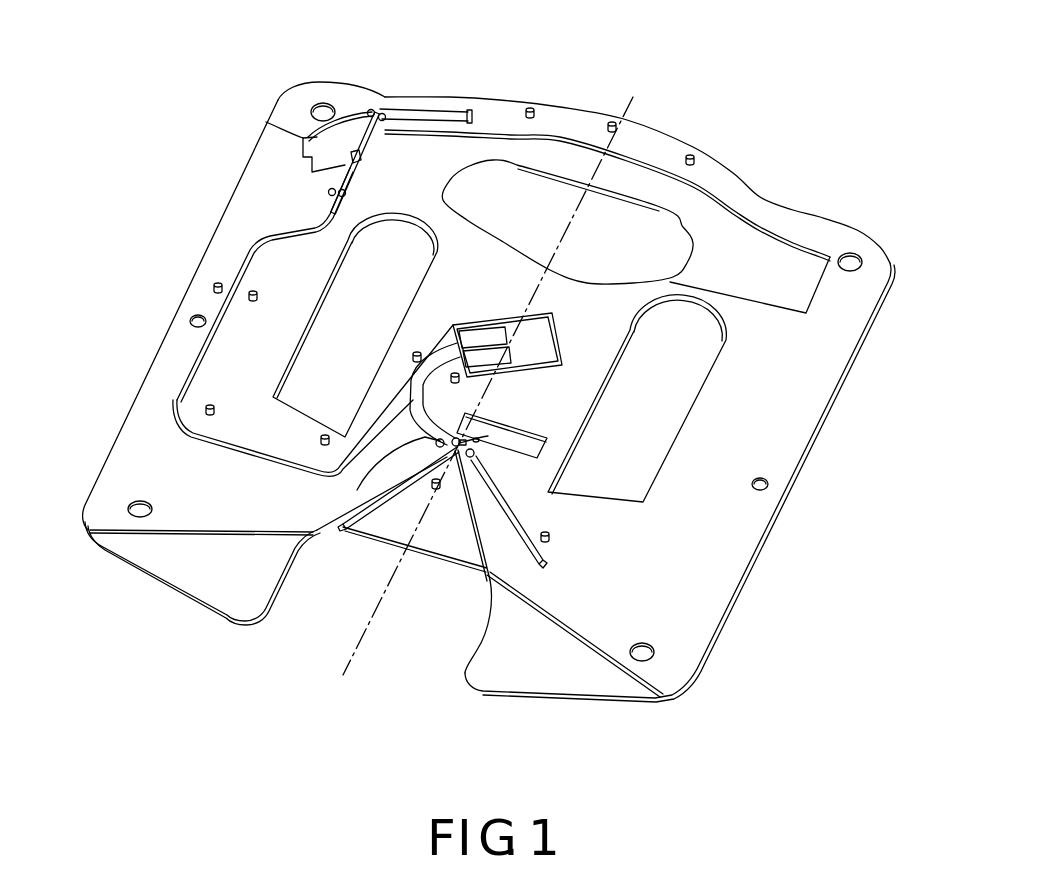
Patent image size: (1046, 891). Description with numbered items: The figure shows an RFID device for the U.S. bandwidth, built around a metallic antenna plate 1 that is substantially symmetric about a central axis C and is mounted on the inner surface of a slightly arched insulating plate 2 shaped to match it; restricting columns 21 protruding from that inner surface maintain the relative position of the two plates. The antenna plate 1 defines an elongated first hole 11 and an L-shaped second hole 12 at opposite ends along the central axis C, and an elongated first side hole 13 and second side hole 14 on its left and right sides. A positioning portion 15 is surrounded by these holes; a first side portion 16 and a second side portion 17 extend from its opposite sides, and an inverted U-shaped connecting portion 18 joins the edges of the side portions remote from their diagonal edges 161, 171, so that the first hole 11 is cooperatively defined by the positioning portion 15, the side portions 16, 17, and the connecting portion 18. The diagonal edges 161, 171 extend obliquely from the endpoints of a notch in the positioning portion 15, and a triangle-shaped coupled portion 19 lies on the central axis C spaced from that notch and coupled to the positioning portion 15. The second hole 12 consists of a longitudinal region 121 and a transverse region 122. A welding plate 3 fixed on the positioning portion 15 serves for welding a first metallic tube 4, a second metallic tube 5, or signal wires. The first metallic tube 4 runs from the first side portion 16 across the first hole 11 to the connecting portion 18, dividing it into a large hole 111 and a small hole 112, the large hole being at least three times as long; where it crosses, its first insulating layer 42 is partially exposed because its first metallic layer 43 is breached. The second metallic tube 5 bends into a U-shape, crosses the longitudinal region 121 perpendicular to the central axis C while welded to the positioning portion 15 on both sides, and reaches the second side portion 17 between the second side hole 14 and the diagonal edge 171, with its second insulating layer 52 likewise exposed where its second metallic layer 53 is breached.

The metallic antenna plate 1 is at (817, 367).
The first hole 11 is at (789, 260).
The large hole 111 is at (450, 157).
The small hole 112 is at (322, 148).
The second hole 12 is at (884, 452).
The longitudinal region 121 is at (467, 460).
The transverse region 122 is at (508, 427).
The first side hole 13 is at (340, 297).
The second side hole 14 is at (688, 332).
The positioning portion 15 is at (483, 277).
The first side portion 16 is at (143, 420).
The diagonal edge 161 is at (180, 532).
The second side portion 17 is at (687, 633).
The diagonal edge 171 is at (583, 645).
The connecting portion 18 is at (340, 95).
The coupled portion 19 is at (434, 538).
The insulating plate 2 is at (525, 670).
The restricting columns 21 is at (217, 280).
The welding plate 3 is at (537, 340).
The first metallic tube 4 is at (422, 109).
The first insulating layer 42 is at (358, 157).
The first metallic layer 43 is at (391, 107).
The second metallic tube 5 is at (541, 566).
The second insulating layer 52 is at (393, 500).
The second metallic layer 53 is at (347, 523).
The central axis C is at (633, 95).